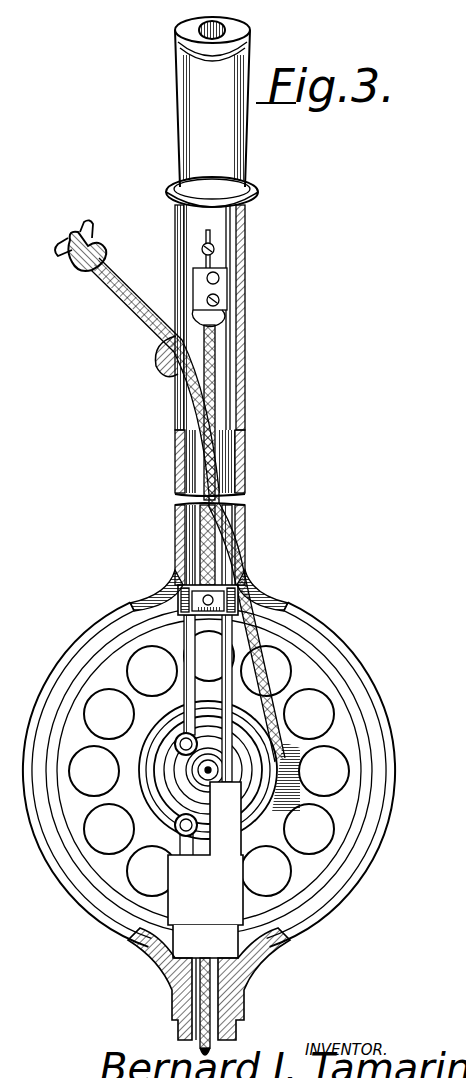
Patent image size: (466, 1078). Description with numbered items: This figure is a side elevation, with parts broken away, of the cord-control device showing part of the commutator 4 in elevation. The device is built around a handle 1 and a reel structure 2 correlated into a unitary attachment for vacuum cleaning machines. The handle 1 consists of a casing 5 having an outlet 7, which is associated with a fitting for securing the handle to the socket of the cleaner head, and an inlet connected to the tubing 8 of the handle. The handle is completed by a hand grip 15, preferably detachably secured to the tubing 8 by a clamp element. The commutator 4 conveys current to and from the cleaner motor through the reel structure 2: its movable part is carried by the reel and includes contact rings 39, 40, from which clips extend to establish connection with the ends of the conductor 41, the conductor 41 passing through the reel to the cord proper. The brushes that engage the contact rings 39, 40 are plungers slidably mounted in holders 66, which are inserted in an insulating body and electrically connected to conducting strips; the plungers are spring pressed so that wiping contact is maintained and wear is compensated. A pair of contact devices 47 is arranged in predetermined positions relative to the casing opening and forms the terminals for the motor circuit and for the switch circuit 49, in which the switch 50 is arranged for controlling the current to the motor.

The handle 1 is at (247, 386).
The reel structure 2 is at (78, 820).
The commutator 4 is at (150, 764).
The casing 5 is at (340, 644).
The outlet 7 is at (192, 968).
The tubing 8 is at (247, 470).
The hand grip 15 is at (230, 148).
The contact ring 39 is at (178, 835).
The contact ring 40 is at (170, 726).
The conductor 41 is at (236, 530).
The contact devices 47 is at (178, 590).
The switch circuit 49 is at (215, 352).
The switch 50 is at (234, 286).
The holders 66 is at (180, 752).